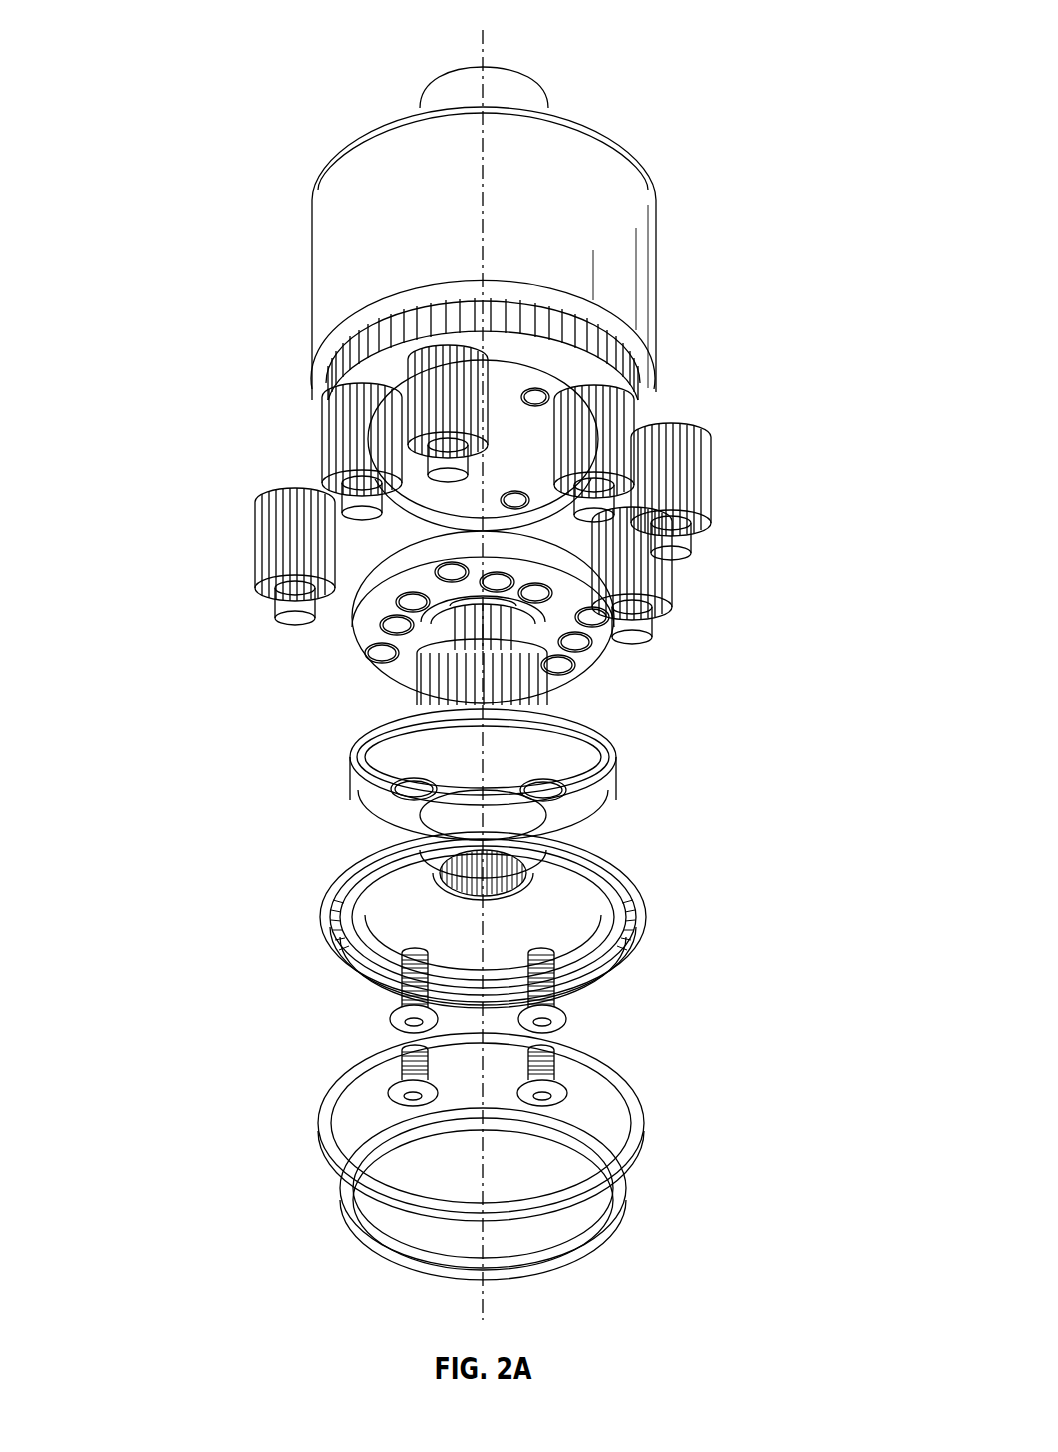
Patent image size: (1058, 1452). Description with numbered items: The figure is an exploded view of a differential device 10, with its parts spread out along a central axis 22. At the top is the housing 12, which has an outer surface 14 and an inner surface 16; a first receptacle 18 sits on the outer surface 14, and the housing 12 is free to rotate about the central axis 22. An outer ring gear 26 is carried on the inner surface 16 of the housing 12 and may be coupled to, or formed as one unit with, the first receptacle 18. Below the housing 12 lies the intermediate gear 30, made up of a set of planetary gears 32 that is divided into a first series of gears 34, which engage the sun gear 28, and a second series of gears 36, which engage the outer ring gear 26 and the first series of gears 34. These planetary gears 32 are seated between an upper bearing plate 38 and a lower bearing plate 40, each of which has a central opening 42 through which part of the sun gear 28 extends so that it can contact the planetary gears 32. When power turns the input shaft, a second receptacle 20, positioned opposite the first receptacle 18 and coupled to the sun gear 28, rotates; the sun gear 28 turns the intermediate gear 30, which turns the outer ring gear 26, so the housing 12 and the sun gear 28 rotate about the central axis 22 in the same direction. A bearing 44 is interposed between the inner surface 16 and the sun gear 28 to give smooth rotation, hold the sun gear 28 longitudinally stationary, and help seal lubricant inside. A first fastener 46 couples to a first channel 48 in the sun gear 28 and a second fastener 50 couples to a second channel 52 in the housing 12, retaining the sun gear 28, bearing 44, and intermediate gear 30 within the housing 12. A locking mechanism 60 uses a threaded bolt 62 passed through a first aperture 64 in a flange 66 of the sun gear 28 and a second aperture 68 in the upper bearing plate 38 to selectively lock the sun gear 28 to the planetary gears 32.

The differential device 10 is at (246, 40).
The housing 12 is at (657, 268).
The outer surface 14 is at (312, 237).
The inner surface 16 is at (326, 374).
The first receptacle 18 is at (492, 69).
The second receptacle 20 is at (487, 893).
The central axis 22 is at (483, 1312).
The outer ring gear 26 is at (383, 343).
The sun gear 28 is at (545, 692).
The intermediate gear 30 is at (712, 500).
The set of planetary gears 32 is at (662, 620).
The first series of gears 34 is at (322, 445).
The second series of gears 36 is at (255, 555).
The upper bearing plate 38 is at (352, 650).
The lower bearing plate 40 is at (585, 372).
The central opening 42 is at (575, 640).
The bearing 44 is at (640, 928).
The first fastener 46 is at (620, 1197).
The first channel 48 is at (605, 828).
The second fastener 50 is at (632, 1090).
The second channel 52 is at (617, 385).
The locking mechanism 60 is at (563, 1020).
The threaded bolt 62 is at (395, 1013).
The first aperture 64 is at (412, 787).
The flange 66 is at (612, 760).
The second aperture 68 is at (381, 655).